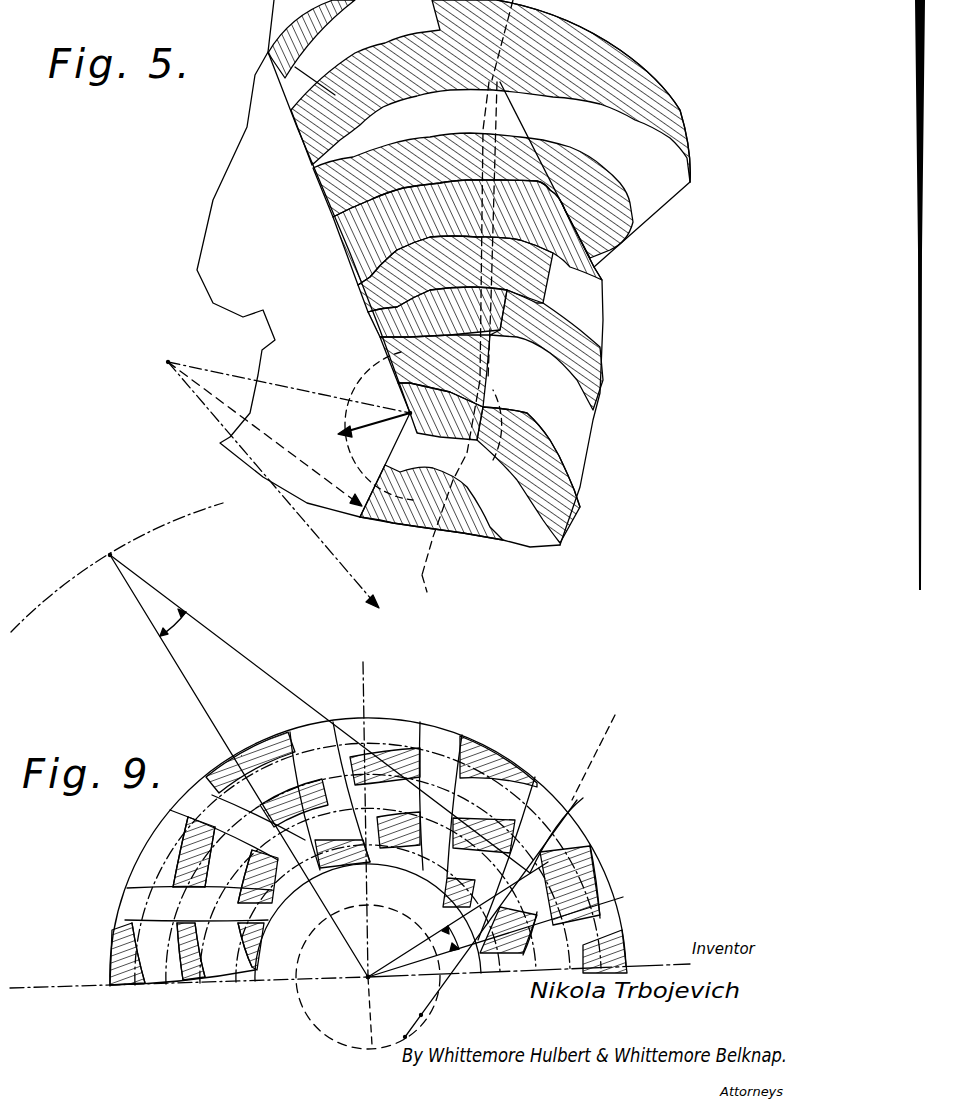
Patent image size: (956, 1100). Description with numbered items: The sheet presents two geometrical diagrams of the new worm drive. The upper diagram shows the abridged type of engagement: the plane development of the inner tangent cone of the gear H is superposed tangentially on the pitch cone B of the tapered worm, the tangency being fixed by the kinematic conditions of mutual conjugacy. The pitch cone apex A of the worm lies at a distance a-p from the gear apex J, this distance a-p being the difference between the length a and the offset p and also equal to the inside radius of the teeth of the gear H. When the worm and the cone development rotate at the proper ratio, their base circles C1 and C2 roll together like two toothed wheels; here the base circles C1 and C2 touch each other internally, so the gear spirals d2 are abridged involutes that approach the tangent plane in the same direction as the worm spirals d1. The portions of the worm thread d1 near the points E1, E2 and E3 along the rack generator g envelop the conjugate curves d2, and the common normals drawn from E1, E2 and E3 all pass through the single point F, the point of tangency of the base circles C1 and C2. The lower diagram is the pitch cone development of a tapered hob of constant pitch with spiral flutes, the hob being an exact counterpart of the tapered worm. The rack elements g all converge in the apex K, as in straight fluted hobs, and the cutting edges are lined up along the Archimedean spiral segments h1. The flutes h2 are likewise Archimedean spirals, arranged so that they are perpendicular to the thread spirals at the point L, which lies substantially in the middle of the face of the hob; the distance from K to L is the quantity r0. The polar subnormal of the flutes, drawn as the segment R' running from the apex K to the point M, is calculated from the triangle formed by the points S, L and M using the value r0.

In FIG. 5, the pitch cone B is at (662, 81).
In FIG. 5, the worm thread d1 is at (355, 54).
In FIG. 5, the point on rack generator E1 is at (492, 81).
In FIG. 5, the point on rack generator E2 is at (428, 146).
In FIG. 5, the point on rack generator E3 is at (370, 312).
In FIG. 5, the inner tangent cone of the gear H is at (604, 358).
In FIG. 5, the point of tangency F is at (481, 421).
In FIG. 5, the gear spirals (abridged involutes) d2 is at (537, 412).
In FIG. 5, the base circle C1 is at (372, 348).
In FIG. 5, the base circle C2 is at (432, 592).
In FIG. 9, the base circle C2 is at (298, 997).
In FIG. 5, the gear apex J is at (283, 374).
In FIG. 5, the apex distance a-p is at (265, 434).
In FIG. 5, the distance a is at (273, 485).
In FIG. 5, the pitch cone apex of the worm A is at (407, 414).
In FIG. 5, the distance p is at (374, 427).
In FIG. 9, the distance p is at (390, 1027).
In FIG. 9, the point M is at (108, 556).
In FIG. 9, the radius R prime R' is at (239, 766).
In FIG. 9, the rack generator g is at (361, 848).
In FIG. 9, the apex K is at (371, 974).
In FIG. 9, the distance K L r0 is at (452, 930).
In FIG. 9, the point L is at (583, 798).
In FIG. 9, the Archimedean spiral segments h1 is at (577, 937).
In FIG. 9, the flutes h2 is at (607, 757).
In FIG. 9, the point S is at (419, 1013).